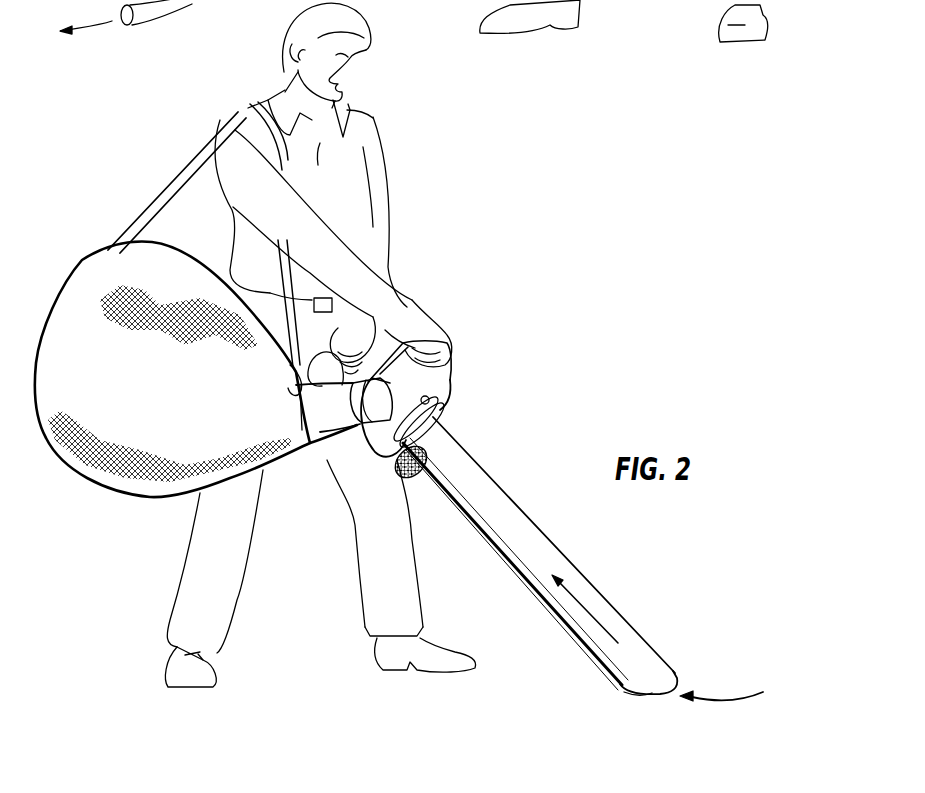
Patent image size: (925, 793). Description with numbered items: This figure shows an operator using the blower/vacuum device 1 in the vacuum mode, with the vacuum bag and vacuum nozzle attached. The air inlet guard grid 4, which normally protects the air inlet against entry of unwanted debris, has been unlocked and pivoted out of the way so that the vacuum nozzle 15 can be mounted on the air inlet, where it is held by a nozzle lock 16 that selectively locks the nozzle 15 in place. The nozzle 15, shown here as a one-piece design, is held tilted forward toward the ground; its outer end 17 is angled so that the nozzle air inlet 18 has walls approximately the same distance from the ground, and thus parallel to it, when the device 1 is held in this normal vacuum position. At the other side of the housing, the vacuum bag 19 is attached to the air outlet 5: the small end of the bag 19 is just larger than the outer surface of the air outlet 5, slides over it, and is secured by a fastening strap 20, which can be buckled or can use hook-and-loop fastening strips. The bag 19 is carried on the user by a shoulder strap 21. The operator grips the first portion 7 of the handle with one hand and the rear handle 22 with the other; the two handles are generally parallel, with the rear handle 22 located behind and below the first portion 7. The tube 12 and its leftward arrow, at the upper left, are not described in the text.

The blower/vacuum device 1 is at (470, 407).
The air inlet guard grid 4 is at (418, 470).
The air outlet 5 is at (350, 407).
The first portion 7 is at (403, 340).
The blower tube 12 is at (142, 27).
The vacuum nozzle 15 is at (502, 500).
The nozzle lock 16 is at (447, 387).
The outer end 17 is at (658, 677).
The nozzle air inlet 18 is at (630, 695).
The vacuum bag 19 is at (148, 398).
The fastening strap 20 is at (338, 433).
The shoulder strap 21 is at (172, 178).
The rear handle 22 is at (293, 385).